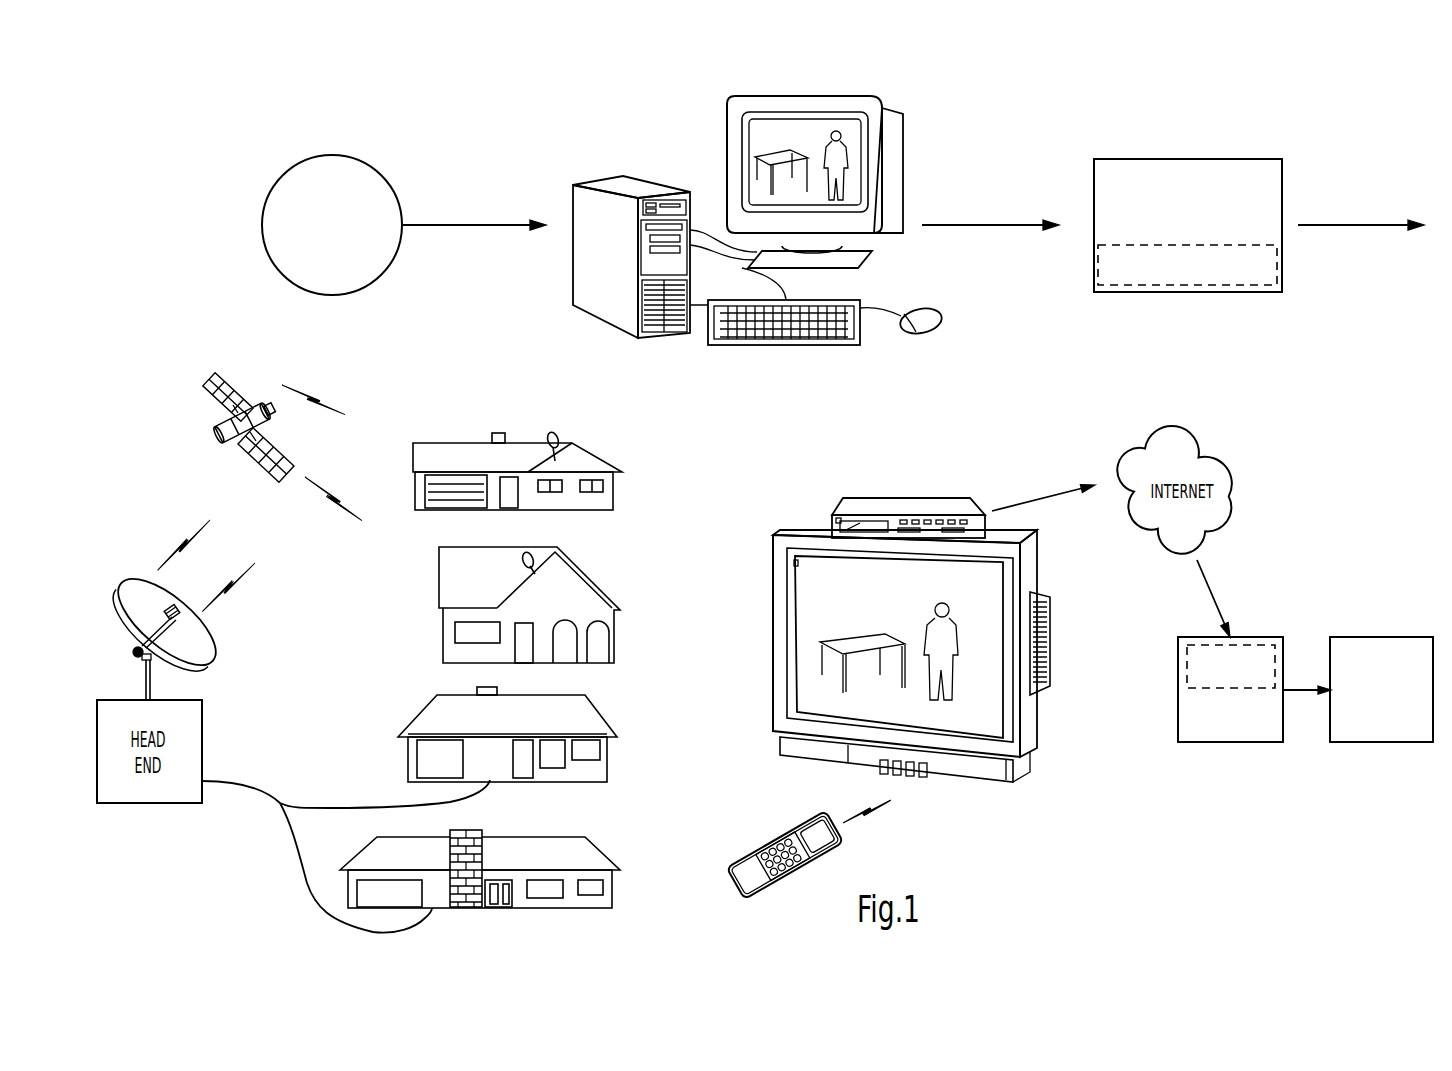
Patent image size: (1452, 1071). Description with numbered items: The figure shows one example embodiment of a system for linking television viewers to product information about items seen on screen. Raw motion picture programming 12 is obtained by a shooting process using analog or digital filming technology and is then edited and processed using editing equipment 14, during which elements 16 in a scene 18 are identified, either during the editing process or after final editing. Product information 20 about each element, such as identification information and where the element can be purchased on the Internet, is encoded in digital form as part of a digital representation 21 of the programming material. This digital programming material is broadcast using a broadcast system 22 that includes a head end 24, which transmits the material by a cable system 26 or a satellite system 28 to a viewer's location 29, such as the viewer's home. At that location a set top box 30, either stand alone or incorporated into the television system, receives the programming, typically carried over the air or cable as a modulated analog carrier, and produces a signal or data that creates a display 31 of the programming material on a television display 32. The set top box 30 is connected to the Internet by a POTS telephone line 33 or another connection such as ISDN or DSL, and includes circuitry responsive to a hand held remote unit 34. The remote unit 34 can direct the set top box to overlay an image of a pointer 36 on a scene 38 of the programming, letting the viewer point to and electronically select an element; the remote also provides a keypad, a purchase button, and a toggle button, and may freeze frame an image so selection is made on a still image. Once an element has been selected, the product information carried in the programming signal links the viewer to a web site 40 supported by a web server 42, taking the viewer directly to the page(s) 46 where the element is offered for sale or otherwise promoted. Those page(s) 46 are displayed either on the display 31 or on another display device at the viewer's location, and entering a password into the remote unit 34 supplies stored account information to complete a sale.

The raw motion picture programming 12 is at (332, 153).
The editing equipment 14 is at (655, 143).
The elements 16 is at (830, 152).
The scene 18 is at (857, 130).
The product information 20 is at (1270, 262).
The digital representation 21 is at (1273, 159).
The broadcast system 22 is at (246, 698).
The head end 24 is at (199, 700).
The cable system 26 is at (245, 784).
The satellite system 28 is at (335, 566).
The viewer's location 29 is at (597, 453).
The set top box 30 is at (963, 498).
The display 31 is at (808, 696).
The television display 32 is at (1040, 567).
The POTS telephone line 33 is at (1023, 502).
The hand held remote unit 34 is at (783, 833).
The pointer 36 is at (867, 640).
The scene 38 is at (817, 575).
The web site 40 is at (1263, 650).
The web server 42 is at (1197, 735).
The page(s) 46 is at (1397, 643).